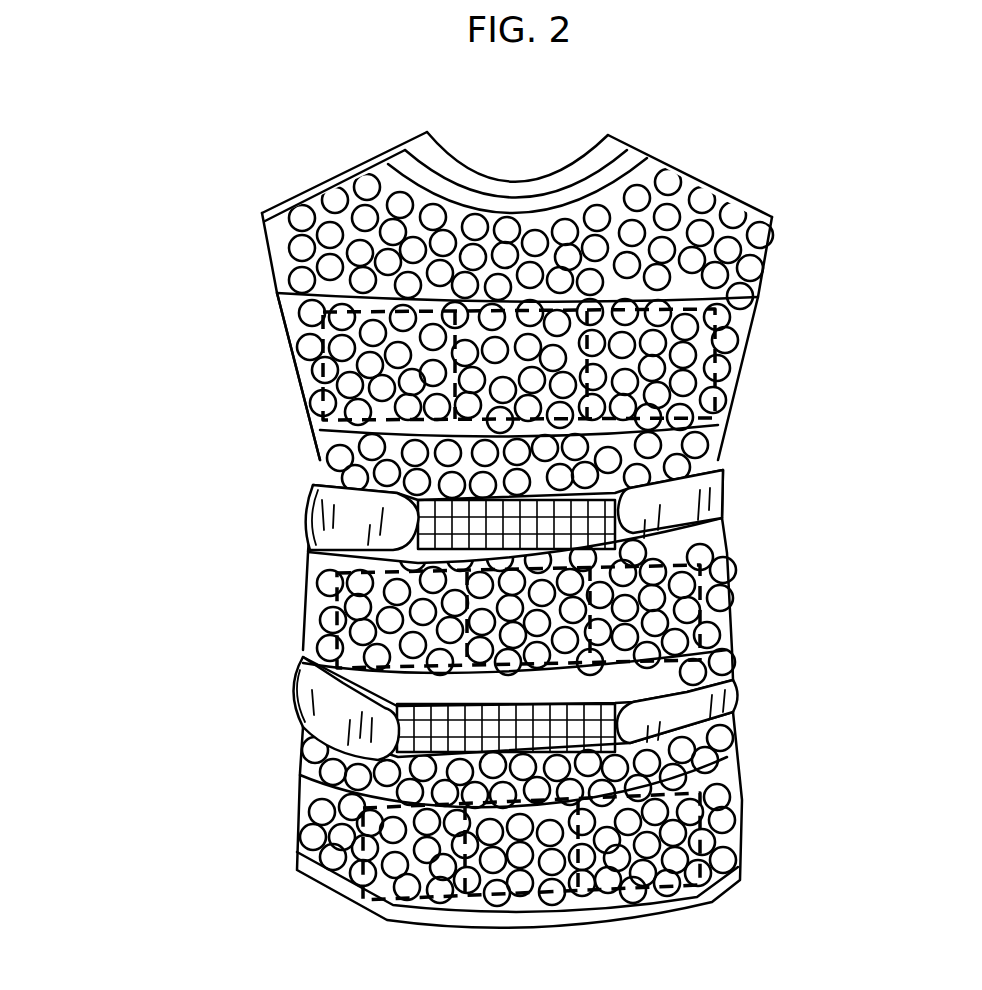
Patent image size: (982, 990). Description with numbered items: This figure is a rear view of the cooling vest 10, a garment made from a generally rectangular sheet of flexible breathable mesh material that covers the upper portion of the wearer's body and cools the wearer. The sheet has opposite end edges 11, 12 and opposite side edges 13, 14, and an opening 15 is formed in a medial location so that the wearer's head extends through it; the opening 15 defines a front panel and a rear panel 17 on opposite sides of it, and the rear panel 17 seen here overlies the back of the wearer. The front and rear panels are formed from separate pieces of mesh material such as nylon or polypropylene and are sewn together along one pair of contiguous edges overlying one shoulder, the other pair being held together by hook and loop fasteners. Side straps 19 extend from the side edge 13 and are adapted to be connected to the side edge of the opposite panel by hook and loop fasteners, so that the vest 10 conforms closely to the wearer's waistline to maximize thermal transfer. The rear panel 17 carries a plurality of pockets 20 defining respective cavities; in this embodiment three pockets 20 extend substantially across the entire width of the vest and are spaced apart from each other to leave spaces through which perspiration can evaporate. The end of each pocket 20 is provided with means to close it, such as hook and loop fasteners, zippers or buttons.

The cooling vest 10 is at (238, 242).
The end edge 11 is at (363, 157).
The end edge 12 is at (697, 178).
The side edge 13 is at (295, 405).
The side edge 14 is at (757, 297).
The opening 15 is at (453, 158).
The rear panel 17 is at (370, 235).
The side straps 19 is at (310, 513).
The pockets 20 is at (357, 343).